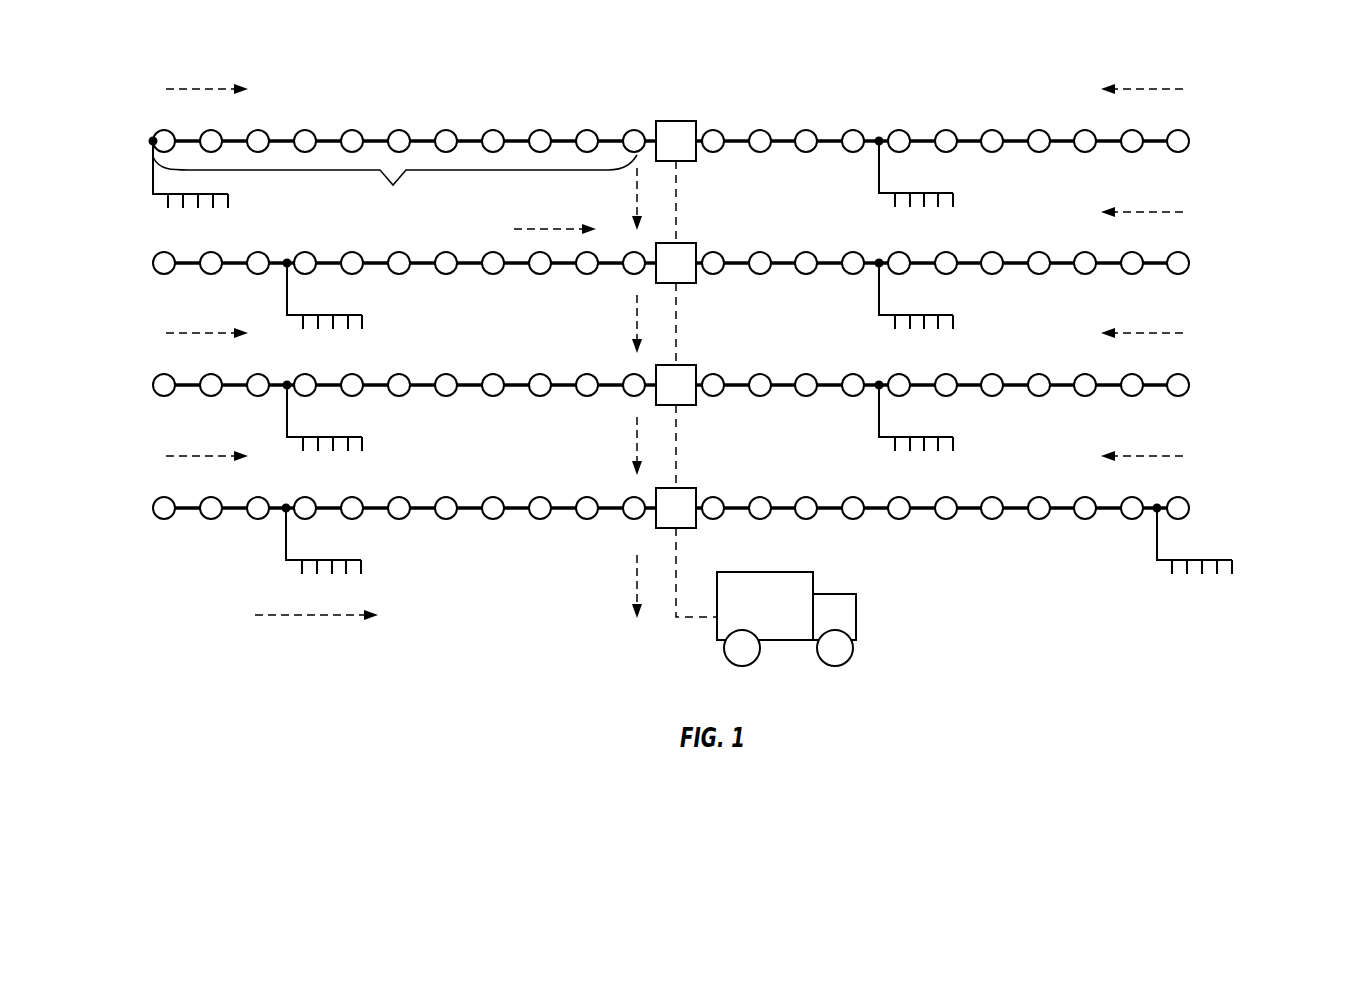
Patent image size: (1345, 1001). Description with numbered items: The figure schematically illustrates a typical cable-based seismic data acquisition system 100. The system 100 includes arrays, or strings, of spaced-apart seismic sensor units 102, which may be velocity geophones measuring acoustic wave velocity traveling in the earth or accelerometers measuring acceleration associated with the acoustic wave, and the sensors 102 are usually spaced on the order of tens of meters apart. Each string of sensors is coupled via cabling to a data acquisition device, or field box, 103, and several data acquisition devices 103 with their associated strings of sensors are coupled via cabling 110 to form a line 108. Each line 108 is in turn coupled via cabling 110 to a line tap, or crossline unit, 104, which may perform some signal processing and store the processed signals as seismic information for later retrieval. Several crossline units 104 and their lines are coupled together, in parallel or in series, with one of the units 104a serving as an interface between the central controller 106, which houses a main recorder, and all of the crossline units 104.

The cable-based seismic data acquisition system 100 is at (727, 333).
The seismic sensor unit 102 is at (228, 194).
The data acquisition device 103 is at (1185, 140).
The crossline unit 104 is at (686, 121).
The interface crossline unit 104a is at (686, 488).
The central controller 106 is at (835, 594).
The line 108 is at (395, 184).
The cabling 110 is at (372, 150).